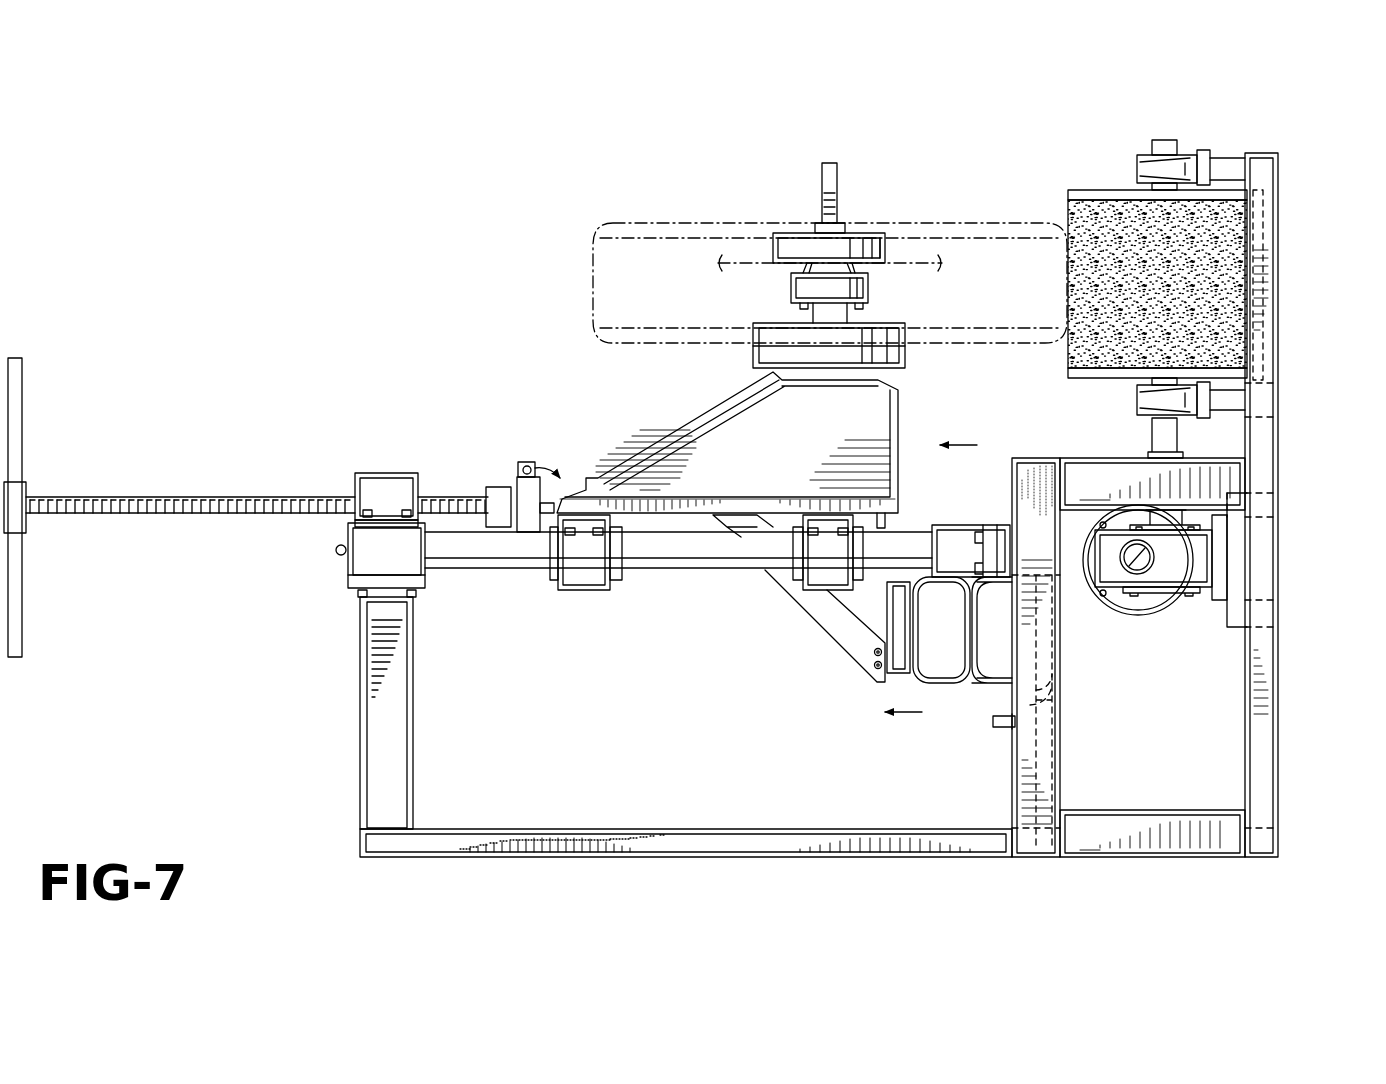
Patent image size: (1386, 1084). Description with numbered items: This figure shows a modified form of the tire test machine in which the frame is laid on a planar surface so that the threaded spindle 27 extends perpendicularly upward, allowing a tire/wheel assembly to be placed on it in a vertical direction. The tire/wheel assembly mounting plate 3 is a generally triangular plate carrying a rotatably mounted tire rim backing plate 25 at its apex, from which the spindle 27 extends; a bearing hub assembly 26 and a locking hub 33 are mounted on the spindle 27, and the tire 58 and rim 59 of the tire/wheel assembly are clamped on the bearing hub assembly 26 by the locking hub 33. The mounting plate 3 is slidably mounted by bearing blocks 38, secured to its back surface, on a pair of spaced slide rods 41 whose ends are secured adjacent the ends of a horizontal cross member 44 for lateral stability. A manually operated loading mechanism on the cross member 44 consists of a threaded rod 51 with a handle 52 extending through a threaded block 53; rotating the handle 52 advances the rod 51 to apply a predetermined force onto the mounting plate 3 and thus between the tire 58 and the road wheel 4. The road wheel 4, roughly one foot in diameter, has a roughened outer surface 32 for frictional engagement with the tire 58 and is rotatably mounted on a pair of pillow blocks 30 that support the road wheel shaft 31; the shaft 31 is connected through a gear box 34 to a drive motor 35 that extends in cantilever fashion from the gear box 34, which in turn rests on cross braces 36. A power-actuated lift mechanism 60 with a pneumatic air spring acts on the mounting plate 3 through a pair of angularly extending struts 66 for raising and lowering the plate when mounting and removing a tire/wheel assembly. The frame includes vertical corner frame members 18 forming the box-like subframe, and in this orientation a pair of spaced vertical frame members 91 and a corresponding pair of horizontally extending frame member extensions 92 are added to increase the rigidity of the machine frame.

The tire/wheel assembly mounting plate 3 is at (672, 418).
The road wheel 4 is at (1108, 188).
The corner frame members 18 is at (1163, 845).
The tire rim backing plate 25 is at (893, 325).
The bearing hub assembly 26 is at (791, 290).
The threaded spindle 27 is at (840, 170).
The pillow blocks 30 is at (1228, 163).
The road wheel shaft 31 is at (1165, 140).
The roughened outer surface 32 is at (1235, 247).
The locking hub 33 is at (795, 233).
The gear box 34 is at (1177, 572).
The drive motor 35 is at (1120, 610).
The cross braces 36 is at (1240, 568).
The bearing blocks 38 is at (590, 575).
The slide rods 41 is at (700, 552).
The horizontal cross member 44 is at (368, 558).
The threaded rod 51 is at (190, 515).
The handle 52 is at (22, 398).
The threaded block 53 is at (390, 487).
The tire 58 is at (690, 225).
The rim 59 is at (742, 262).
The lift mechanism 60 is at (948, 690).
The struts 66 is at (830, 624).
The vertical frame members 91 is at (378, 653).
The frame member extensions 92 is at (641, 830).